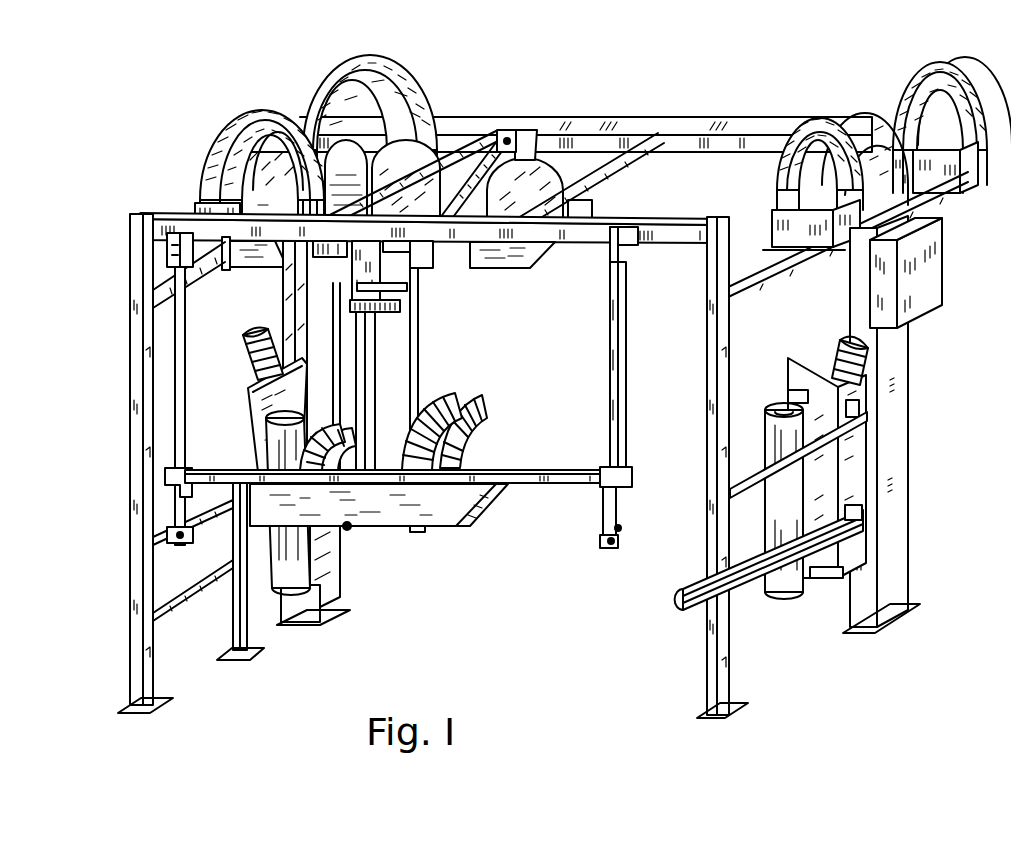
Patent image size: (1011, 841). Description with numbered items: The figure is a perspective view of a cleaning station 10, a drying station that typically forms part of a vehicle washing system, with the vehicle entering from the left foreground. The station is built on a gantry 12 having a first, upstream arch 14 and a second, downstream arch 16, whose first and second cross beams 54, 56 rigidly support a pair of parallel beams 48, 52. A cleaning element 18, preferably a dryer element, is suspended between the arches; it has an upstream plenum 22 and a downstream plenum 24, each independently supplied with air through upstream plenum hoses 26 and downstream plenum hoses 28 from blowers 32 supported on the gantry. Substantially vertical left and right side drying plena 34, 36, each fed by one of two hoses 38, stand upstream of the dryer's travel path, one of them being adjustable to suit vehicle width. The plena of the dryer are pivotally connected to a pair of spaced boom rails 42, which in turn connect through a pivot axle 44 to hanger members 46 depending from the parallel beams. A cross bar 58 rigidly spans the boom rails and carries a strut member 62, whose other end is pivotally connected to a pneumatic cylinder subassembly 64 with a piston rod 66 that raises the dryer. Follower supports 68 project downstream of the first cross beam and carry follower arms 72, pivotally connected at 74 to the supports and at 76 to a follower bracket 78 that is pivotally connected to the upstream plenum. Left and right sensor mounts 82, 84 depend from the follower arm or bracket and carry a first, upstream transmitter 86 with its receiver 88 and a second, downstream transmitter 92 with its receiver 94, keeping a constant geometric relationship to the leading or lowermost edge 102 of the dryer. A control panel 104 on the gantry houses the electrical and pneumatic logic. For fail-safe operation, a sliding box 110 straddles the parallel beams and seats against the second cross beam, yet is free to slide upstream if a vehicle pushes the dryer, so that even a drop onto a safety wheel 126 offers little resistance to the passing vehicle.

The cleaning station 10 is at (541, 386).
The gantry 12 is at (640, 117).
The first, upstream arch 14 is at (128, 242).
The second, downstream arch 16 is at (310, 104).
The cleaning element 18 is at (399, 473).
The upstream plenum 22 is at (460, 520).
The downstream plenum 24 is at (494, 494).
The upstream plenum hoses 26 is at (450, 393).
The downstream plenum hoses 28 is at (480, 397).
The blowers 32 is at (504, 262).
The left side drying plenum 34 is at (259, 403).
The right side drying plenum 36 is at (790, 373).
The hoses 38 is at (837, 342).
The boom rails 42 is at (427, 363).
The pivot axle 44 is at (424, 296).
The hanger members 46 is at (424, 268).
The parallel beam 48 is at (474, 141).
The parallel beam 52 is at (513, 132).
The first cross beam 54 is at (624, 226).
The second cross beam 56 is at (725, 118).
The cross bar 58 is at (385, 323).
The strut member 62 is at (427, 323).
The pneumatic cylinder subassembly 64 is at (377, 172).
The piston rod 66 is at (423, 248).
The follower supports 68 is at (636, 243).
The follower arms 72 is at (628, 370).
The pivot connection 74 is at (634, 282).
The pivot connection 76 is at (628, 470).
The follower bracket 78 is at (517, 470).
The left sensor mount 82 is at (165, 492).
The right sensor mount 84 is at (617, 507).
The first, upstream transmitter 86 is at (172, 543).
The first, upstream receiver 88 is at (612, 541).
The second, downstream transmitter 92 is at (182, 533).
The second receiver 94 is at (620, 531).
The leading edge 102 is at (418, 530).
The control panel 104 is at (942, 246).
The sliding box 110 is at (510, 135).
The safety wheel 126 is at (348, 530).